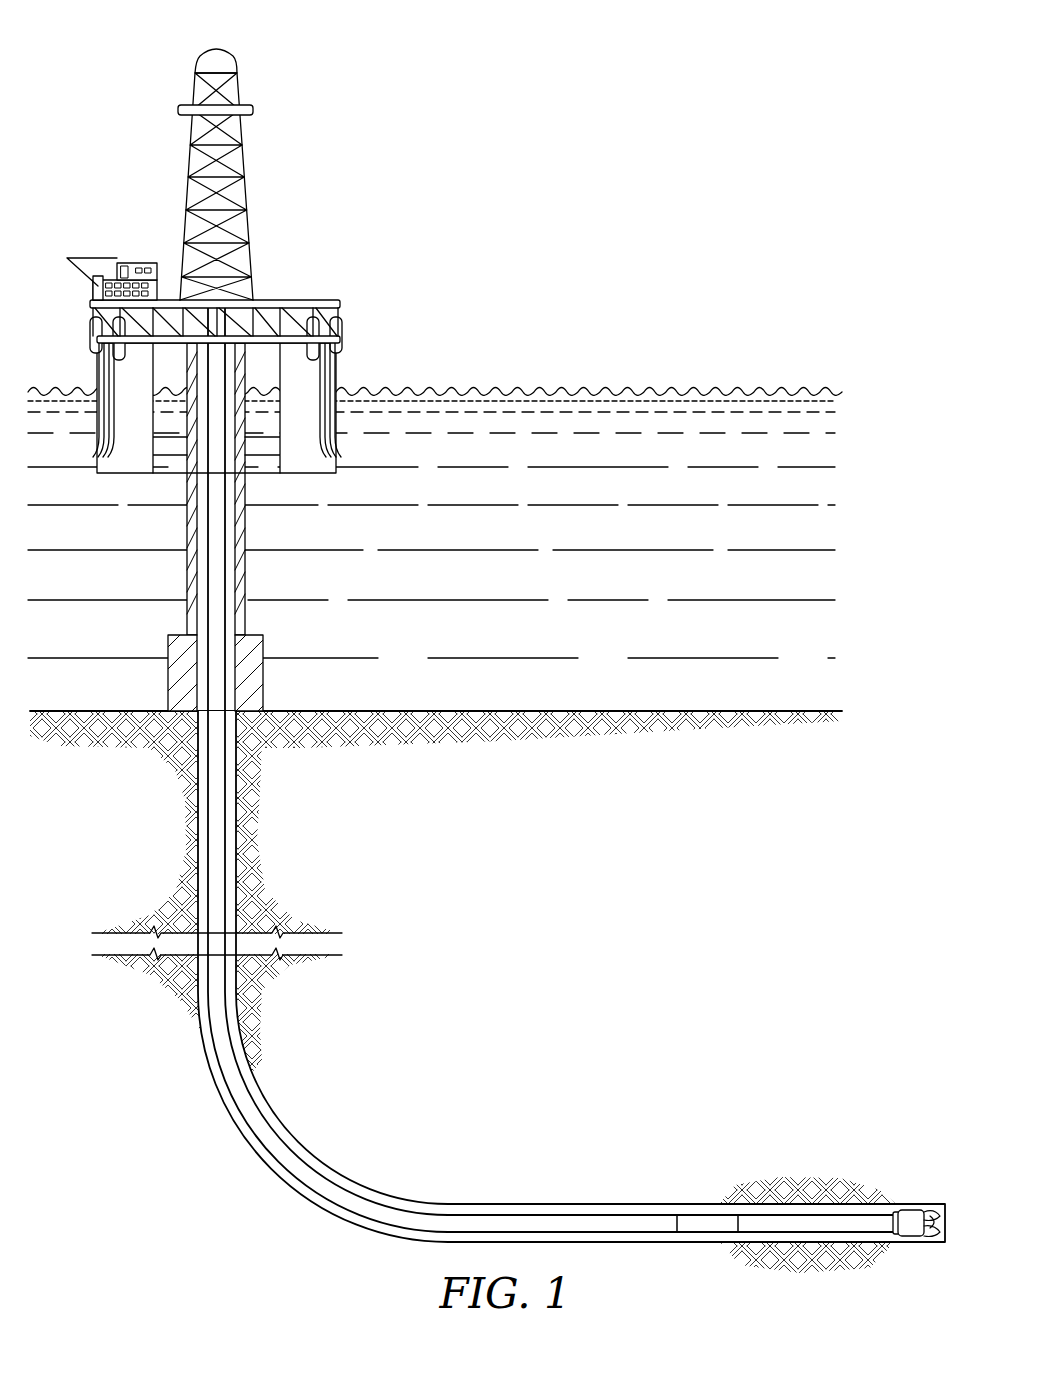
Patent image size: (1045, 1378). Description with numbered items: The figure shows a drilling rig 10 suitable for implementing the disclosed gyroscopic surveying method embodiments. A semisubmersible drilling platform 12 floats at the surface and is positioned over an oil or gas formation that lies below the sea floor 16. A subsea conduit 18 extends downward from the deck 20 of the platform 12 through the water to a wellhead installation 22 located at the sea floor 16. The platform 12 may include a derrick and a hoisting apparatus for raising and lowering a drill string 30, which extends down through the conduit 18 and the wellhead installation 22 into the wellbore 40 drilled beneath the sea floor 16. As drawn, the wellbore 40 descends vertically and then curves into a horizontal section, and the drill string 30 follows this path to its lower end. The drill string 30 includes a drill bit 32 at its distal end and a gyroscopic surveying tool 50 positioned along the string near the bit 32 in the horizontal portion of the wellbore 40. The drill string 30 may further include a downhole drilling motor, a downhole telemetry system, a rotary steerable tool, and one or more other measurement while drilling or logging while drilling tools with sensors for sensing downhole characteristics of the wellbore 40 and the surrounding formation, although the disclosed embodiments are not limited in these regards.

The drilling rig 10 is at (343, 168).
The semisubmersible drilling platform 12 is at (320, 300).
The sea floor 16 is at (497, 711).
The subsea conduit 18 is at (245, 574).
The deck 20 is at (342, 333).
The wellhead installation 22 is at (262, 636).
The drill string 30 is at (216, 492).
The drill bit 32 is at (915, 1214).
The wellbore 40 is at (203, 827).
The gyroscopic surveying tool 50 is at (703, 1220).